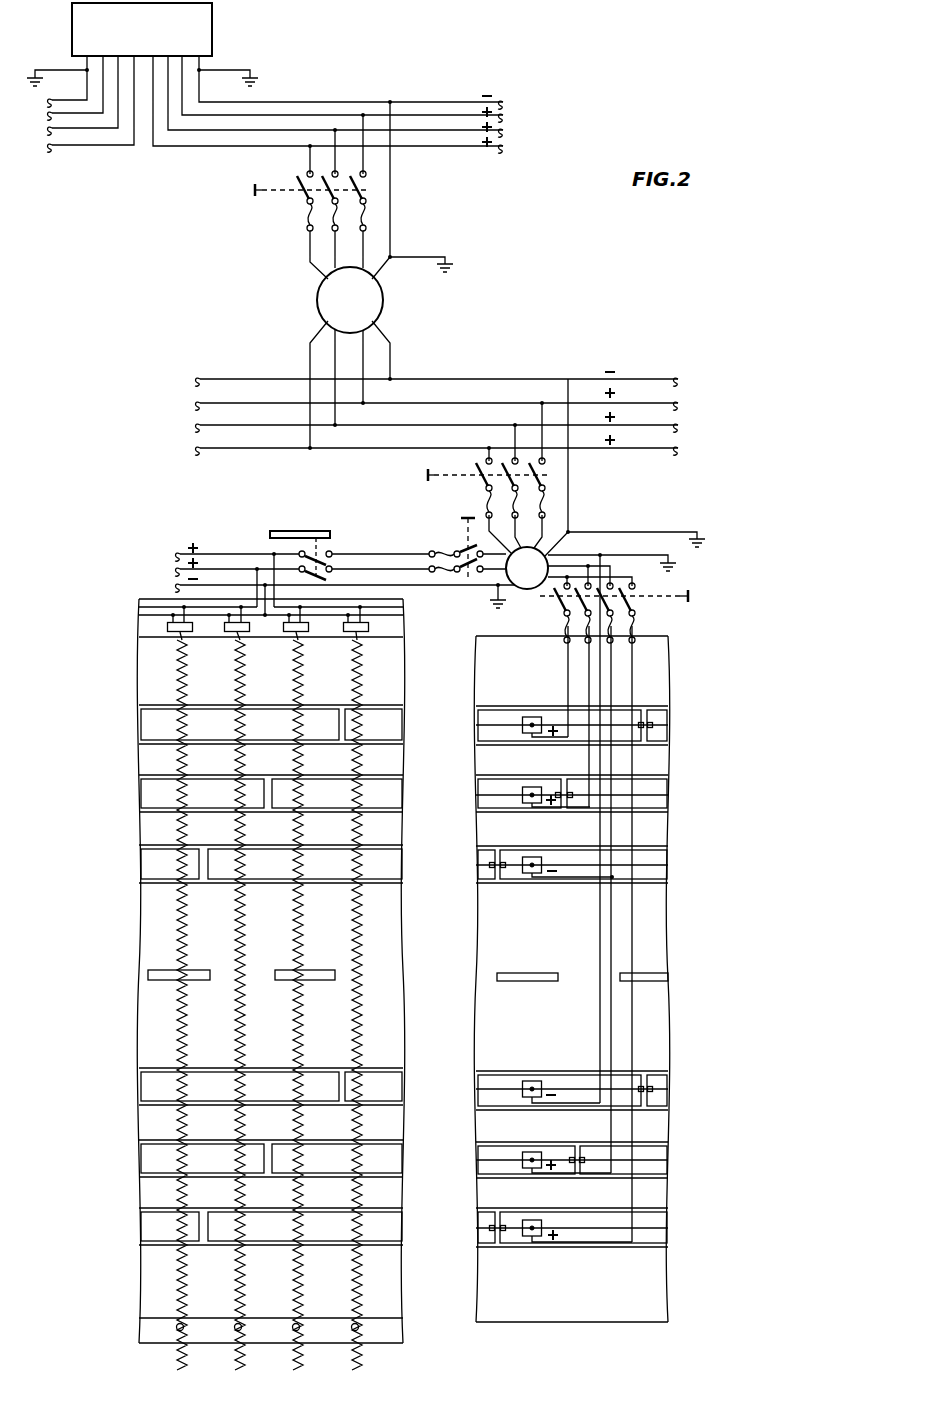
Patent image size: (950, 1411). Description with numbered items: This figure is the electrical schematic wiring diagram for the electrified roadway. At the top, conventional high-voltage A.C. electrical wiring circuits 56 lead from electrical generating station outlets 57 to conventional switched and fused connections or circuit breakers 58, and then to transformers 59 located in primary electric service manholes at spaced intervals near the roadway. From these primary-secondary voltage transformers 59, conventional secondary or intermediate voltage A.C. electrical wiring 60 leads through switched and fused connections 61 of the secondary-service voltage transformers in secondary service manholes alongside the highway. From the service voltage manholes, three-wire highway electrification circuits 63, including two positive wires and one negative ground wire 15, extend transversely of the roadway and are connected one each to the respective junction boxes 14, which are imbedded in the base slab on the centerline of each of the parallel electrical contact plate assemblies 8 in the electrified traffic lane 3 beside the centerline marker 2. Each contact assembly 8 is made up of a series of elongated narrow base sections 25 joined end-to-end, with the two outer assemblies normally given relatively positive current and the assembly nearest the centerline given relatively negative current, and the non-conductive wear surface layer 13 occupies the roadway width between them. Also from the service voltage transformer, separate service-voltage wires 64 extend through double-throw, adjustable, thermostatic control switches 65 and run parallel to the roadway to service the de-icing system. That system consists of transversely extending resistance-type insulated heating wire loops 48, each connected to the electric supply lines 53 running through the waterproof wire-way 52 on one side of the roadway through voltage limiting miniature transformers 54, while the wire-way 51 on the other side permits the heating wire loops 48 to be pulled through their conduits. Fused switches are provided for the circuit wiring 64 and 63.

The electrical generating station outlets 57 is at (153, 40).
The high-voltage A.C. electrical wiring circuits 56 is at (462, 146).
The switched and fused connections 58 is at (307, 204).
The transformers 59 is at (363, 311).
The secondary or intermediate voltage A.C. electrical wiring 60 is at (665, 452).
The switched and fused connections 61 is at (489, 488).
The three-wire highway electrification circuits 63 is at (662, 604).
The service-voltage wires 64 is at (376, 569).
The thermostatic control switches 65 is at (312, 530).
The wire-way 52 is at (392, 626).
The electric supply lines 53 is at (332, 616).
The voltage limiting miniature transformers 54 is at (285, 634).
The heating wire loops 48 is at (357, 948).
The wire-way 51 is at (388, 1330).
The wear surface layer 13 is at (530, 696).
The wires 15 is at (590, 661).
The junction boxes 14 is at (523, 725).
The electrical contact plate assemblies 8 is at (678, 735).
The base sections 25 is at (494, 798).
The centerline marker 2 is at (525, 973).
The traffic lane 3 is at (530, 1047).